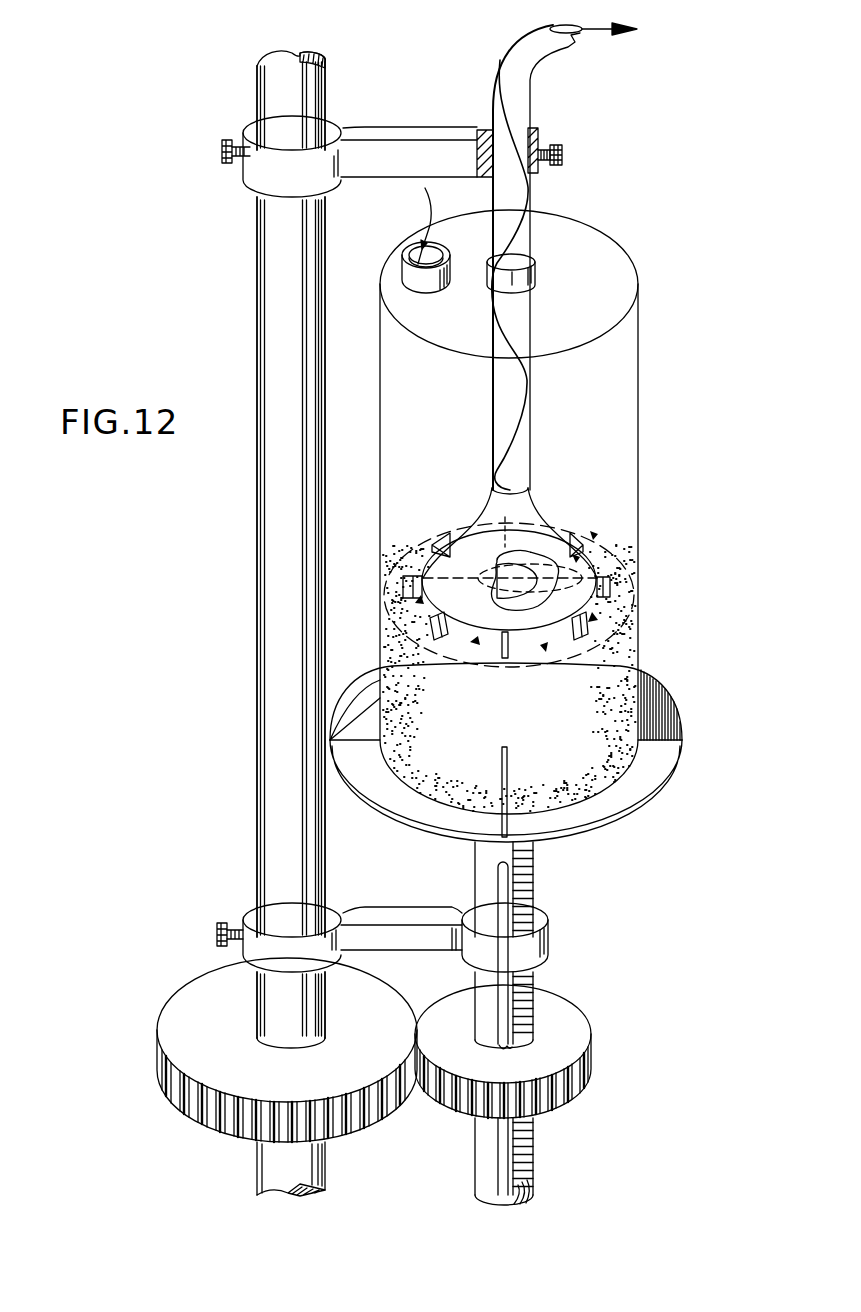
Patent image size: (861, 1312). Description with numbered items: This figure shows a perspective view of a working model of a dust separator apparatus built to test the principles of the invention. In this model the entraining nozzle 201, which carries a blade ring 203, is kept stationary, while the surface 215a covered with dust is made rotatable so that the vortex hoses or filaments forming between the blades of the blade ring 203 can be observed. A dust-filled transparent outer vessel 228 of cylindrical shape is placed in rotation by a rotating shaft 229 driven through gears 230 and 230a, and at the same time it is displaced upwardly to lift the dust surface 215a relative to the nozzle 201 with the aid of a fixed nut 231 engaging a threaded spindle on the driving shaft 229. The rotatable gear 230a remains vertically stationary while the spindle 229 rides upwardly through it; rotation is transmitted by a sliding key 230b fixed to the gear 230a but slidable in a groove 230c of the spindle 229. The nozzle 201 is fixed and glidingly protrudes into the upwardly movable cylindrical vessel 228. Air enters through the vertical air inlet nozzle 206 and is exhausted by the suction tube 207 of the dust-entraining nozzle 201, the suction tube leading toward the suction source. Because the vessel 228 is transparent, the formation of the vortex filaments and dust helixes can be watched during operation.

The suction tube 207 is at (542, 61).
The vertical air inlet nozzle 206 is at (444, 246).
The transparent outer vessel 228 is at (622, 348).
The entraining nozzle 201 is at (528, 508).
The blade ring 203 is at (609, 587).
The dust surface 215a is at (627, 795).
The groove 230c is at (498, 890).
The fixed nut 231 is at (540, 926).
The gear 230 is at (190, 1004).
The rotatable gear 230a is at (573, 1017).
The sliding key 230b is at (510, 1050).
The rotating shaft 229 is at (488, 1146).